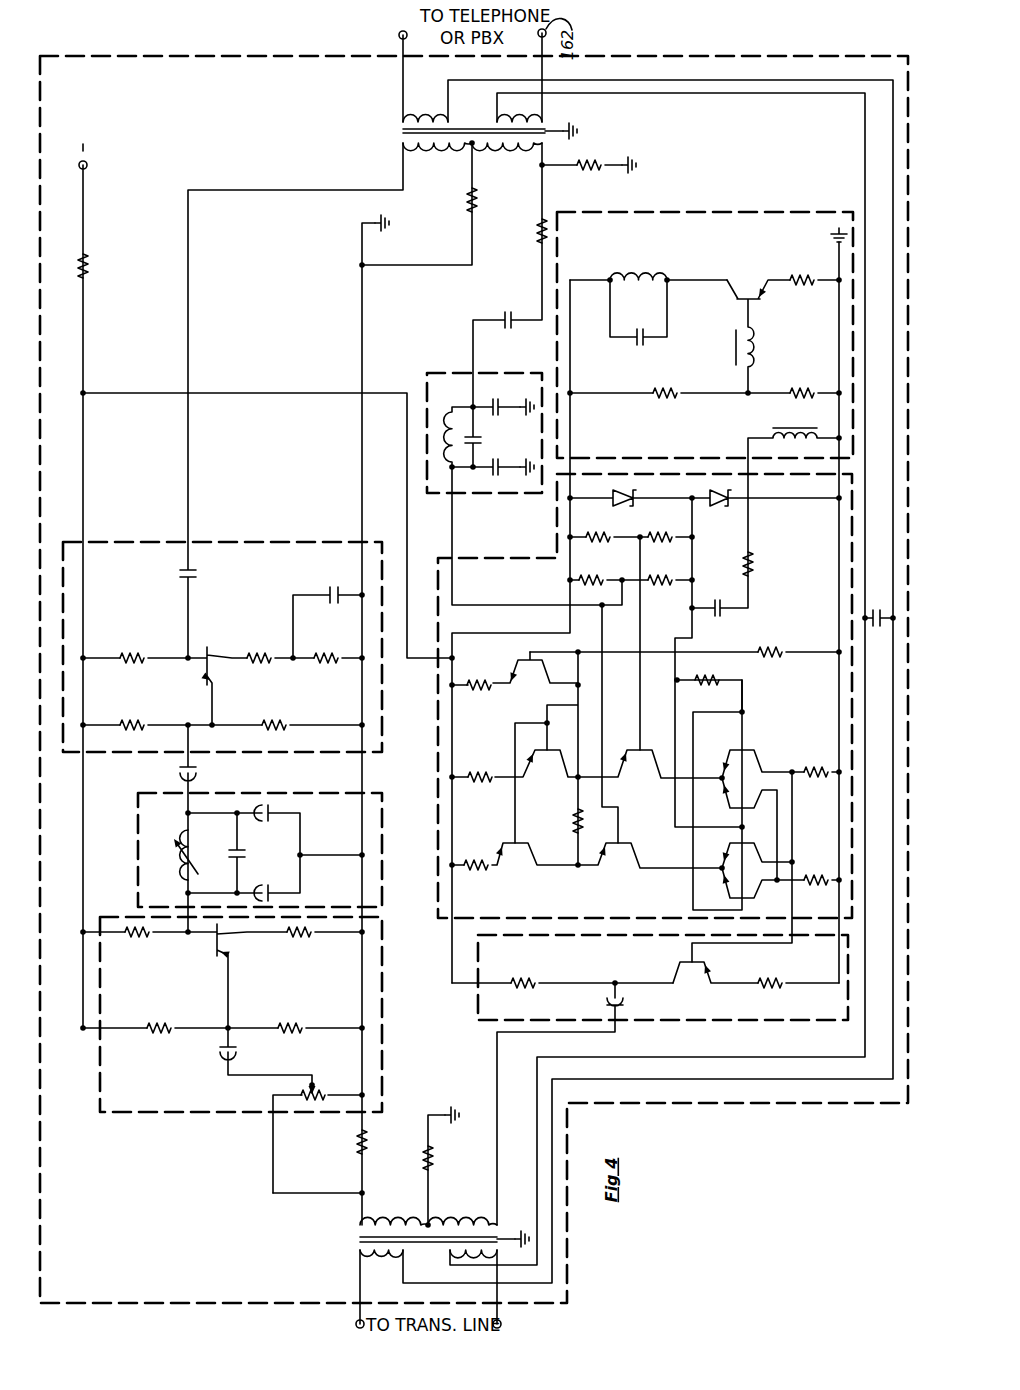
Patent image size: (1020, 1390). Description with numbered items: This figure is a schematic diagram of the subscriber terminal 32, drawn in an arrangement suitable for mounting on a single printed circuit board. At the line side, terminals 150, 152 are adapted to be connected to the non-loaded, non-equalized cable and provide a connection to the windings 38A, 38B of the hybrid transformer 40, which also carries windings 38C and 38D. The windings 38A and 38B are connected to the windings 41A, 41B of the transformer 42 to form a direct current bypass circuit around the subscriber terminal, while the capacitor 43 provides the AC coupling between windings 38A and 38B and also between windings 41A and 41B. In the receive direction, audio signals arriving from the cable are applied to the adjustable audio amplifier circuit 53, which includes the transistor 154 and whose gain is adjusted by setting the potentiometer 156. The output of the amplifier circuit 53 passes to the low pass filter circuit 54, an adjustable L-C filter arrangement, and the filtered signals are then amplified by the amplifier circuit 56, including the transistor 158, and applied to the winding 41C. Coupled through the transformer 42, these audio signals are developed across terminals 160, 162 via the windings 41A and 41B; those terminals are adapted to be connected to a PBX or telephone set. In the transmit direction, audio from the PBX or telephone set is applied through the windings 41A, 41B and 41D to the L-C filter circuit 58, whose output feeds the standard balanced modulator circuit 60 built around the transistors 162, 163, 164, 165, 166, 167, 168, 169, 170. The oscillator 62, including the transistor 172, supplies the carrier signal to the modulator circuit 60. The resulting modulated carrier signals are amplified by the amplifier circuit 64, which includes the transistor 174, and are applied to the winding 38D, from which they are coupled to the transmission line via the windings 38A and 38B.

The subscriber terminal 32 is at (40, 1170).
The hybrid transformer 40 is at (418, 1225).
The transformer 42 is at (469, 146).
The winding 38A is at (396, 1256).
The winding 38B is at (460, 1258).
The winding 38C is at (392, 1218).
The winding 38D is at (460, 1216).
The winding 41A is at (428, 126).
The winding 41B is at (516, 112).
The winding 41C is at (460, 160).
The winding 41D is at (518, 157).
The capacitor 43 is at (878, 608).
The adjustable audio amplifier circuit 53 is at (143, 1112).
The low pass filter circuit 54 is at (138, 868).
The amplifier circuit 56 is at (130, 542).
The L-C filter circuit 58 is at (432, 373).
The balanced modulator circuit 60 is at (438, 848).
The oscillator 62 is at (740, 212).
The amplifier circuit 64 is at (478, 1012).
The terminal 150 is at (356, 1324).
The terminal 152 is at (501, 1326).
The transistor 154 is at (222, 960).
The potentiometer 156 is at (316, 1082).
The transistor 158 is at (210, 662).
The terminal 160 is at (399, 32).
The transistor 162 is at (515, 852).
The transistor 163 is at (614, 855).
The transistor 164 is at (545, 774).
The transistor 165 is at (640, 780).
The transistor 166 is at (527, 698).
The transistor 167 is at (748, 752).
The transistor 168 is at (760, 772).
The transistor 169 is at (750, 848).
The transistor 170 is at (730, 888).
The transistor 172 is at (752, 292).
The transistor 174 is at (686, 984).